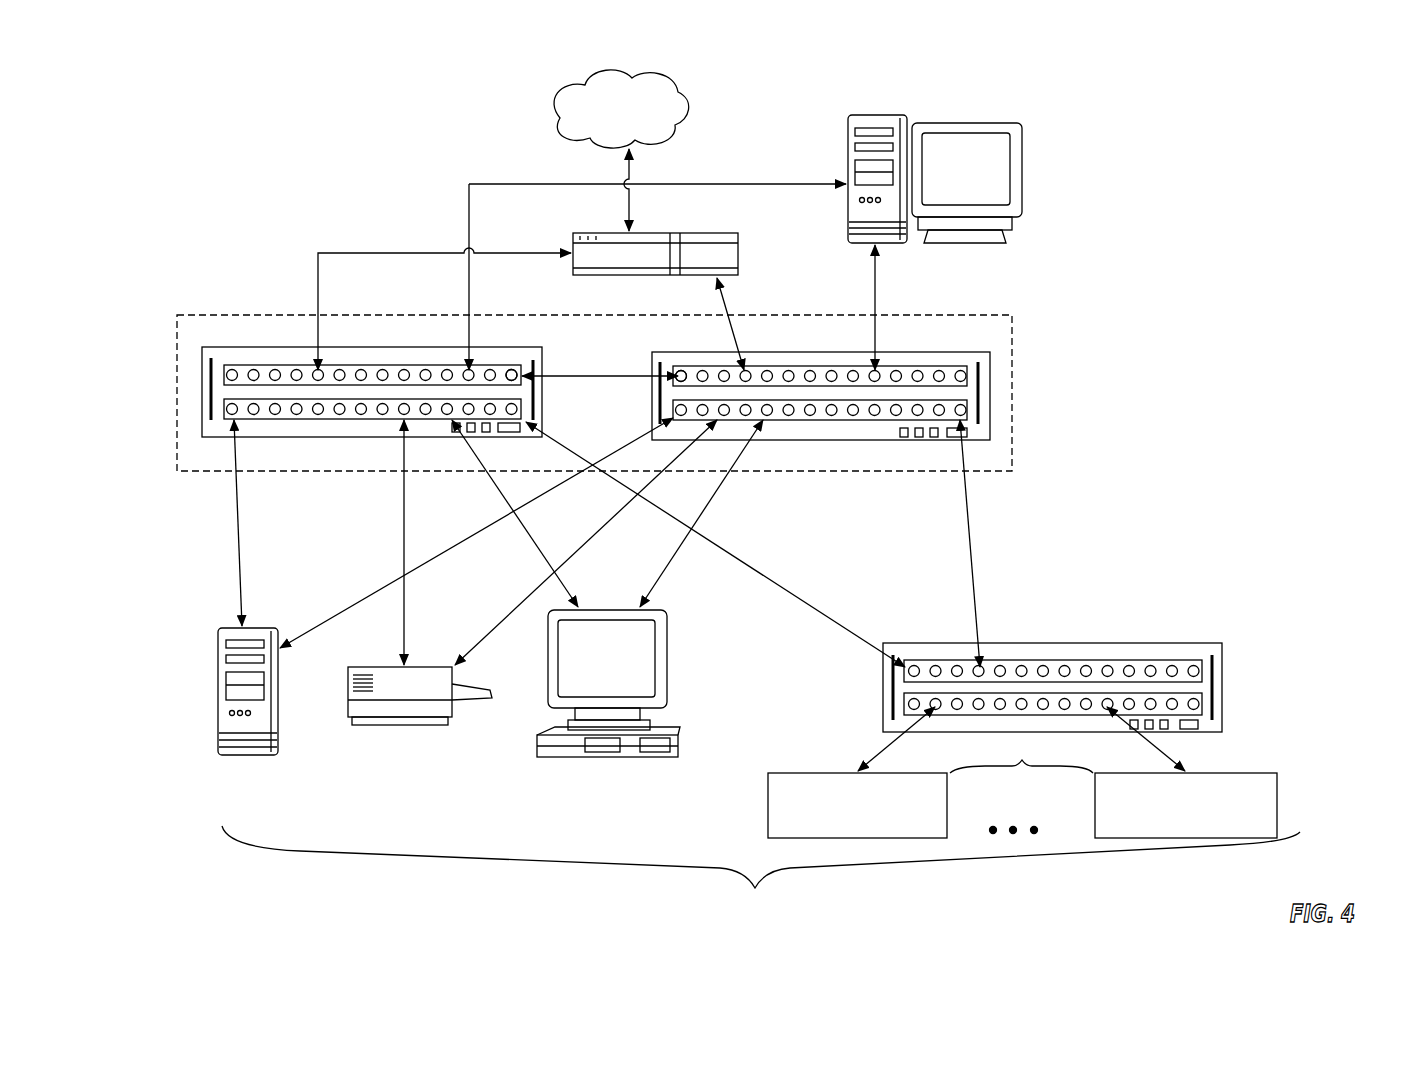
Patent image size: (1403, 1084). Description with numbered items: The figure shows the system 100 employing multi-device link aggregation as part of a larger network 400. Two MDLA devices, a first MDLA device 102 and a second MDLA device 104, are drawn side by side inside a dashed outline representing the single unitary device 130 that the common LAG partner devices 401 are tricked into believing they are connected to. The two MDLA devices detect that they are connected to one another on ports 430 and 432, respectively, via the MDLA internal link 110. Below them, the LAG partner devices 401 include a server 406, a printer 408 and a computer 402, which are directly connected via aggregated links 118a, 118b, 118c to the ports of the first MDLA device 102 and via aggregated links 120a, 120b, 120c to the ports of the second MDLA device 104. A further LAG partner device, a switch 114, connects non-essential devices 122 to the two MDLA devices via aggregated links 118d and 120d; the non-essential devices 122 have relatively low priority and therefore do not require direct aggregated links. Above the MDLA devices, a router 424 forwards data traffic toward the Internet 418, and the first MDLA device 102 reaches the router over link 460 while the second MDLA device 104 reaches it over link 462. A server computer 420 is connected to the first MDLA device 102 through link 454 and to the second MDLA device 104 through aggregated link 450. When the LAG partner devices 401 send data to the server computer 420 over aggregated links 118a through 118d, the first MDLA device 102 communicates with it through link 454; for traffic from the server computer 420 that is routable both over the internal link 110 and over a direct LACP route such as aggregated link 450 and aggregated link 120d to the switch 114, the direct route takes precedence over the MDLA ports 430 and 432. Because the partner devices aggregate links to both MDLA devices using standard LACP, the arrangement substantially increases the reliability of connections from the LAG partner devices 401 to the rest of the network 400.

The system 100 is at (1005, 538).
The first MDLA device 102 is at (385, 348).
The second MDLA device 104 is at (800, 351).
The MDLA internal link 110 is at (580, 378).
The switch 114 is at (1152, 643).
The aggregated link 118a is at (243, 535).
The aggregated link 118b is at (406, 527).
The aggregated link 118c is at (527, 530).
The aggregated link 118d is at (810, 600).
The aggregated link 120a is at (358, 604).
The aggregated link 120b is at (522, 606).
The aggregated link 120c is at (668, 570).
The aggregated link 120d is at (977, 605).
The non-essential devices 122 is at (1022, 772).
The single unitary device 130 is at (1005, 348).
The network 400 is at (1068, 230).
The LAG partner devices 401 is at (761, 876).
The computer 402 is at (667, 656).
The server 406 is at (245, 757).
The printer 408 is at (375, 726).
The Internet 418 is at (553, 104).
The server computer 420 is at (946, 112).
The router 424 is at (705, 233).
The port 430 is at (511, 368).
The port 432 is at (680, 369).
The aggregated link 450 is at (876, 308).
The link 454 is at (470, 308).
The link 460 is at (319, 307).
The link 462 is at (728, 306).